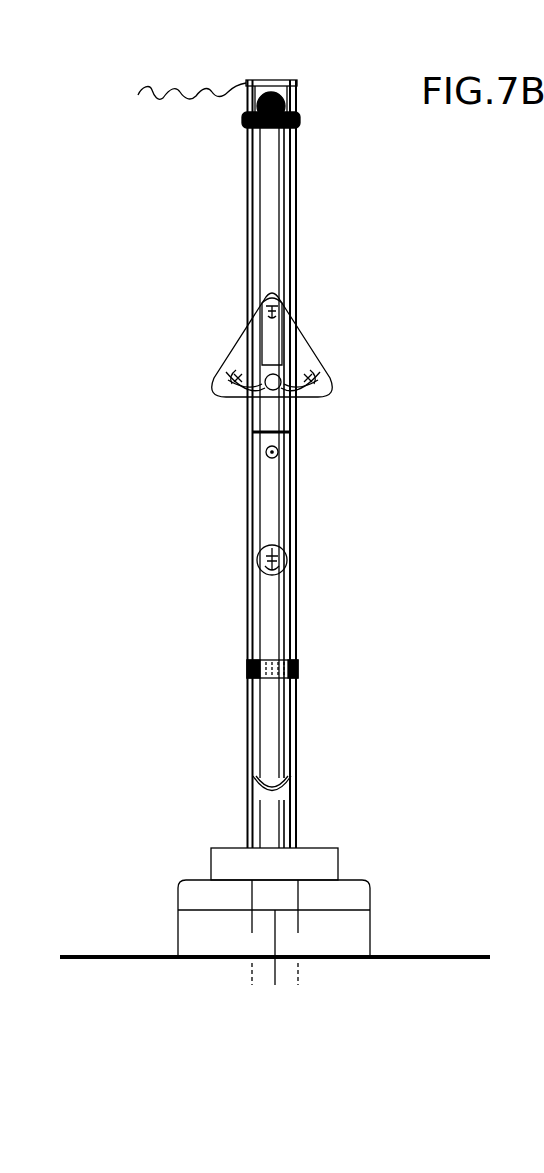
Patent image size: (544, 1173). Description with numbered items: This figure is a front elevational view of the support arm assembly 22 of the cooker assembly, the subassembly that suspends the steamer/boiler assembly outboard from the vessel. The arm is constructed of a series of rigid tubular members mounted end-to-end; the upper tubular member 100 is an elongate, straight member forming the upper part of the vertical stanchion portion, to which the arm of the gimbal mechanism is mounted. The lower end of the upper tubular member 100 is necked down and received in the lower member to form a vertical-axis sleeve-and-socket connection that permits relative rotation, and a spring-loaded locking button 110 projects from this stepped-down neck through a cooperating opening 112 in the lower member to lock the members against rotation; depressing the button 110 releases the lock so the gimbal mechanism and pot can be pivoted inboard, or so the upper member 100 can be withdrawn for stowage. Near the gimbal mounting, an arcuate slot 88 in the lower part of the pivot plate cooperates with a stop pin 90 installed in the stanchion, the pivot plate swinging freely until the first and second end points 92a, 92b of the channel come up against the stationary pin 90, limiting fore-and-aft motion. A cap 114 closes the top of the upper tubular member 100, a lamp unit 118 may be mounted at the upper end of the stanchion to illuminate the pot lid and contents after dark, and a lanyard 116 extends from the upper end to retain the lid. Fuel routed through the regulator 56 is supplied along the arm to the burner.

The support arm assembly 22 is at (352, 308).
The regulator 56 is at (278, 657).
The arcuate slot 88 is at (310, 398).
The stop pin 90 is at (248, 405).
The first end point 92a is at (323, 365).
The second end point 92b is at (230, 368).
The upper tubular member 100 is at (265, 198).
The spring-loaded locking button 110 is at (295, 467).
The cooperating opening 112 is at (263, 455).
The cap 114 is at (293, 88).
The cable 116 is at (172, 102).
The lamp unit 118 is at (293, 135).